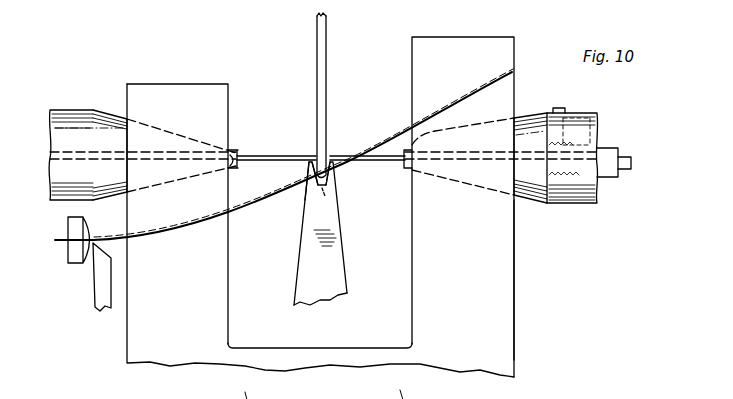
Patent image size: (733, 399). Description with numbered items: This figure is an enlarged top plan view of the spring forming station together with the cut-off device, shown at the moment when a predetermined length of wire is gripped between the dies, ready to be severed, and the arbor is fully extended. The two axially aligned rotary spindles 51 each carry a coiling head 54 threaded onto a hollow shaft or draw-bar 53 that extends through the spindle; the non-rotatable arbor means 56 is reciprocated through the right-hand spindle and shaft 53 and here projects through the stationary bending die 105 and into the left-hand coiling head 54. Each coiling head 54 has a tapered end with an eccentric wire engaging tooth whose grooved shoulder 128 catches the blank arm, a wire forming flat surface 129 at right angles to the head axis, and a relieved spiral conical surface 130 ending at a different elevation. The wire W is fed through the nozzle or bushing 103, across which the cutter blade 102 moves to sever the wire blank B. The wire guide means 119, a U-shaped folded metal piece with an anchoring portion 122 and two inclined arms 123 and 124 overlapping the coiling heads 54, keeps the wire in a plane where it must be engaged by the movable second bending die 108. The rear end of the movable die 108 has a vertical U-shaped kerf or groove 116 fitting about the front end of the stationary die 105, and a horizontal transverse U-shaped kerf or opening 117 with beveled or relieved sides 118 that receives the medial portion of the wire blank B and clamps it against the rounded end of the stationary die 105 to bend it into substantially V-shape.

The rotary spindle 51 is at (62, 110).
The coiling head 54 is at (104, 110).
The hollow shaft or draw-bar 53 is at (614, 148).
The arbor means 56 is at (632, 158).
The anchoring portion 122 is at (207, 362).
The arm of wire guide 123 is at (208, 70).
The arm of wire guide 124 is at (462, 38).
The wire guide means 119 is at (516, 279).
The grooved shoulder 128 is at (254, 157).
The wire forming flat surface 129 is at (245, 164).
The spiral conical surface 130 is at (240, 152).
The stationary bending die 105 is at (327, 88).
The movable second bending die 108 is at (350, 258).
The vertical U-shaped kerf or groove 116 is at (305, 195).
The horizontal transverse U-shaped kerf or opening 117 is at (337, 174).
The beveled or relieved sides 118 is at (340, 192).
The wire W is at (58, 239).
The wire blank B is at (270, 197).
The nozzle or bushing 103 is at (68, 247).
The cutter blade 102 is at (103, 283).